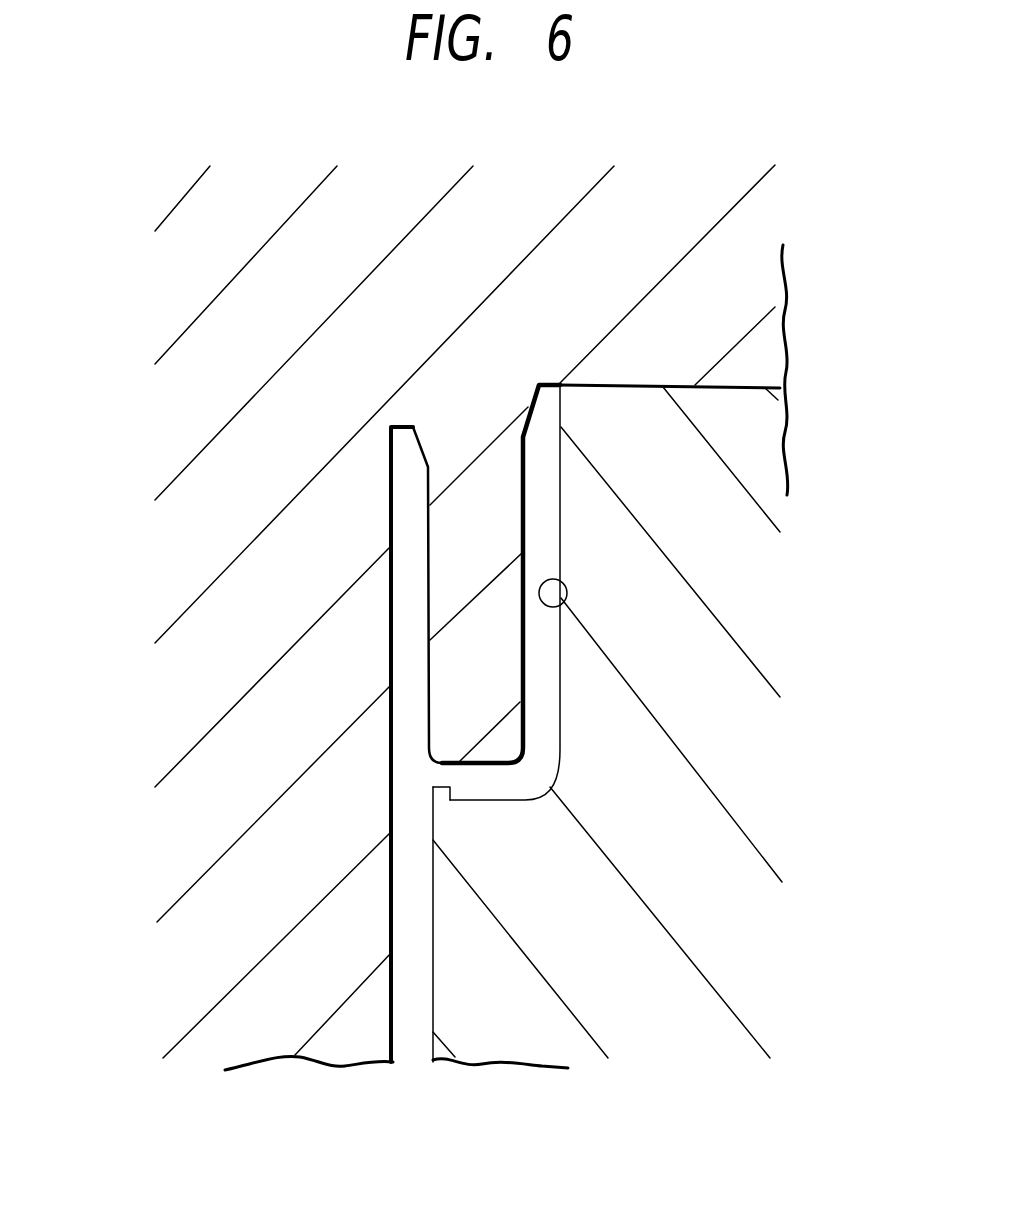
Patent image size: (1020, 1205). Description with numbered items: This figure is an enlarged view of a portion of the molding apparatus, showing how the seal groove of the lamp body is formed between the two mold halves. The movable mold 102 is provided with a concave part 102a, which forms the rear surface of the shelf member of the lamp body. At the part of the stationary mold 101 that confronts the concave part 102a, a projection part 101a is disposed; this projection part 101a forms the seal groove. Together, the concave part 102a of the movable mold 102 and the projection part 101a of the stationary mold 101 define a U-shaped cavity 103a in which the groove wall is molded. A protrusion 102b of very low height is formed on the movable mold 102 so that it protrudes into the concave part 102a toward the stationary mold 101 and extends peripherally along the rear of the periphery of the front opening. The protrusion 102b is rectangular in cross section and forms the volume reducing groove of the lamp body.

The stationary mold 101 is at (672, 218).
The projection part 101a is at (483, 520).
The movable mold 102 is at (735, 788).
The concave part 102a is at (568, 608).
The protrusion 102b is at (441, 800).
The U-shaped cavity 103a is at (417, 657).